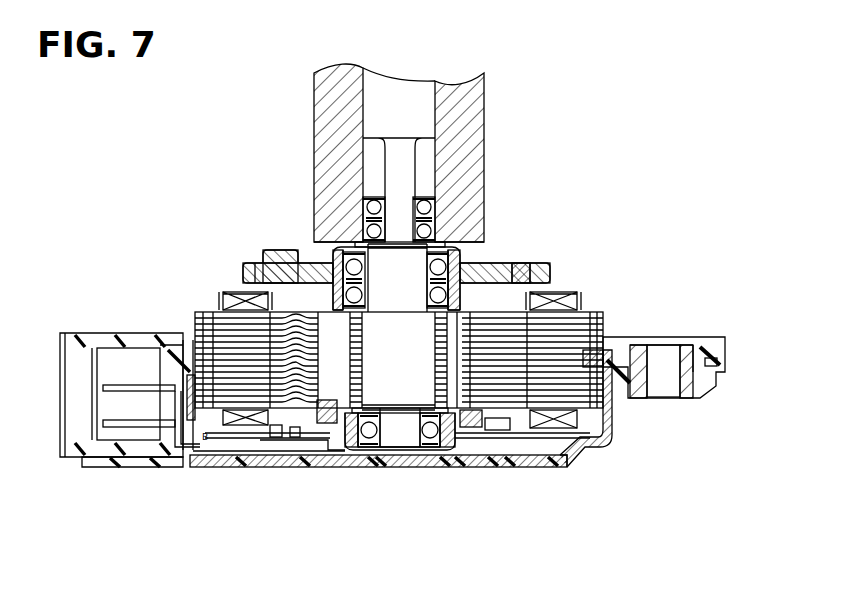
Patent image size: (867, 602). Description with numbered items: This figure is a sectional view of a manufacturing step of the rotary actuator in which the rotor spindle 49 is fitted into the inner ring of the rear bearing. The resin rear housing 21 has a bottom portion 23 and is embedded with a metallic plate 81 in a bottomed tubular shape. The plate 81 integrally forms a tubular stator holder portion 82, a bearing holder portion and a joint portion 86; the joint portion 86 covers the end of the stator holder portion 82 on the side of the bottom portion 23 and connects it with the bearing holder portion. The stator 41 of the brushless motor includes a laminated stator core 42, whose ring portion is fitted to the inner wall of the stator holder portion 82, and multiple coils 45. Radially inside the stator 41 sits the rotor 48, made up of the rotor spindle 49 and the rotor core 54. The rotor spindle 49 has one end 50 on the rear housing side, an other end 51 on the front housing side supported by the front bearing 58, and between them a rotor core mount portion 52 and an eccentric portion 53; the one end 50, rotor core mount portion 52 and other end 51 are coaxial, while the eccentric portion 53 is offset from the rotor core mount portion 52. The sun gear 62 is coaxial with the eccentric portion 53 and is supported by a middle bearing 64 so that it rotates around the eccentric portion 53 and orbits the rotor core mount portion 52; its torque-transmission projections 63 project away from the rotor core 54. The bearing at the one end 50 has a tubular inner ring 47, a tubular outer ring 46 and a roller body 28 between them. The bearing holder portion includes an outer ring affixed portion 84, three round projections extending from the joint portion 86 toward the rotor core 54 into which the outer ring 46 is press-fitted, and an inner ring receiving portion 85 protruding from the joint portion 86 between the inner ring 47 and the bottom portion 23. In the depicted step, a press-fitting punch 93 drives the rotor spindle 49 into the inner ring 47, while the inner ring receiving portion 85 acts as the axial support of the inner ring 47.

The rear housing 21 is at (220, 470).
The bottom portion 23 is at (460, 468).
The roller body 28 is at (373, 469).
The stator 41 is at (200, 310).
The stator core 42 is at (577, 337).
The coils 45 is at (567, 294).
The tubular outer ring 46 is at (360, 452).
The tubular inner ring 47 is at (378, 447).
The rotor 48 is at (620, 480).
The rotor spindle 49 is at (402, 343).
The one end 50 is at (398, 440).
The other end 51 is at (405, 210).
The rotor core mount portion 52 is at (377, 360).
The eccentric portion 53 is at (336, 262).
The rotor core 54 is at (612, 395).
The front bearing 58 is at (377, 195).
The sun gear 62 is at (246, 268).
The torque-transmission projections 63 is at (282, 258).
The middle bearing 64 is at (440, 264).
The plate 81 is at (552, 467).
The stator holder portion 82 is at (190, 375).
The outer ring affixed portion 84 is at (353, 450).
The inner ring receiving portion 85 is at (420, 470).
The joint portion 86 is at (493, 466).
The press-fitting punch 93 is at (402, 160).